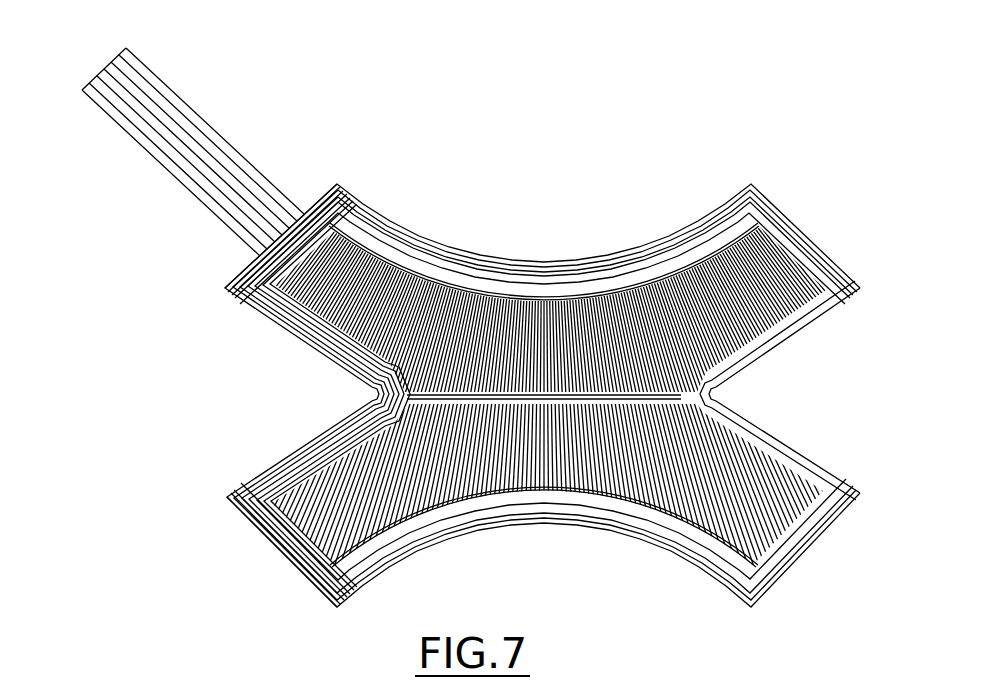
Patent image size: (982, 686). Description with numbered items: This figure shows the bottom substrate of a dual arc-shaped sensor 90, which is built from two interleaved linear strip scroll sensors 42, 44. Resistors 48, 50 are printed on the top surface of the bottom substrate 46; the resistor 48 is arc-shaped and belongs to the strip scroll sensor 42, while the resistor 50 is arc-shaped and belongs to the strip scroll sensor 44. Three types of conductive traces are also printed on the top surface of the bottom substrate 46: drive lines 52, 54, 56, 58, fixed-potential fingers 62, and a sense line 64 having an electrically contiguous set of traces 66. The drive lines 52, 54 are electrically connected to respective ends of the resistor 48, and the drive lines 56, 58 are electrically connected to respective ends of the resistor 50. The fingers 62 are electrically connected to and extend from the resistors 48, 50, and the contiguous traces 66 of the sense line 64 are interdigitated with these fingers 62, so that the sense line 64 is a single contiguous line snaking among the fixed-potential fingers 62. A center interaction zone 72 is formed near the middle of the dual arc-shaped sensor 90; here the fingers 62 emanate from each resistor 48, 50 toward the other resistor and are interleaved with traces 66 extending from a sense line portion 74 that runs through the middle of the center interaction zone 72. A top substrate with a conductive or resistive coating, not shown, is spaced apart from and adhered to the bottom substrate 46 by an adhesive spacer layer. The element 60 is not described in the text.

The linear strip scroll sensor 42 is at (547, 243).
The linear strip scroll sensor 44 is at (546, 531).
The bottom substrate 46 is at (812, 241).
The resistor 48 is at (410, 270).
The resistor 50 is at (407, 530).
The drive line 52 is at (110, 62).
The drive line 54 is at (116, 56).
The drive line 56 is at (99, 76).
The drive line 58 is at (82, 88).
The connector tail 60 is at (206, 121).
The fixed-potential fingers 62 is at (310, 473).
The sense line 64 is at (103, 66).
The traces 66 is at (690, 423).
The center interaction zone 72 is at (592, 406).
The sense line portion 74 is at (477, 490).
The dual arc-shaped sensor 90 is at (770, 113).